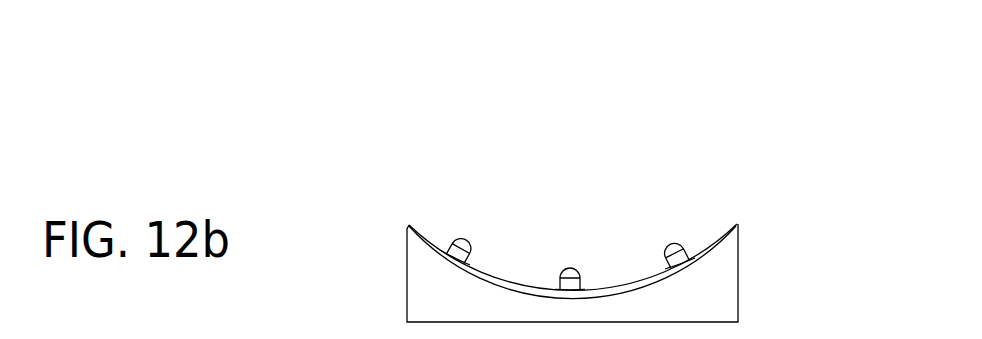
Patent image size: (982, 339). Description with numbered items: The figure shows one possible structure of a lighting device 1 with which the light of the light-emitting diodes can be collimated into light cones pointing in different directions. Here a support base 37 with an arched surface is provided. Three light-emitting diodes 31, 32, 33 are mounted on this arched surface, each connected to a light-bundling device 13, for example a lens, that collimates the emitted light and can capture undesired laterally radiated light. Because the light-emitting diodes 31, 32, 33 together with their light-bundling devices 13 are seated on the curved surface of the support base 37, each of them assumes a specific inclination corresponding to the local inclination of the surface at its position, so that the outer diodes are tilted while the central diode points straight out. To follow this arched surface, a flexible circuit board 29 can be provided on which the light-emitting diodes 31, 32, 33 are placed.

The lighting device 1 is at (318, 84).
The light-bundling device 13 is at (460, 234).
The flexible circuit board 29 is at (723, 228).
The light-emitting diode 31 is at (446, 248).
The light-emitting diode 32 is at (560, 280).
The light-emitting diode 33 is at (693, 247).
The support base 37 is at (738, 288).